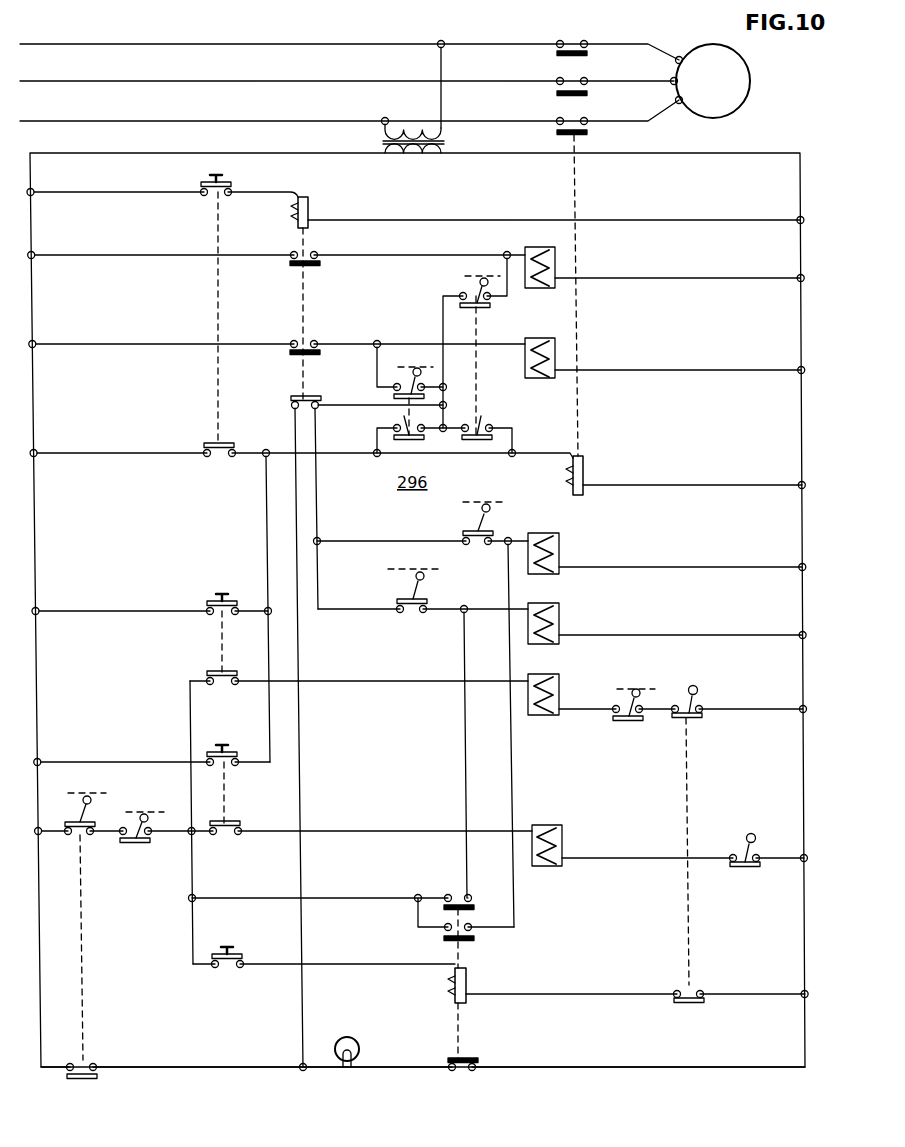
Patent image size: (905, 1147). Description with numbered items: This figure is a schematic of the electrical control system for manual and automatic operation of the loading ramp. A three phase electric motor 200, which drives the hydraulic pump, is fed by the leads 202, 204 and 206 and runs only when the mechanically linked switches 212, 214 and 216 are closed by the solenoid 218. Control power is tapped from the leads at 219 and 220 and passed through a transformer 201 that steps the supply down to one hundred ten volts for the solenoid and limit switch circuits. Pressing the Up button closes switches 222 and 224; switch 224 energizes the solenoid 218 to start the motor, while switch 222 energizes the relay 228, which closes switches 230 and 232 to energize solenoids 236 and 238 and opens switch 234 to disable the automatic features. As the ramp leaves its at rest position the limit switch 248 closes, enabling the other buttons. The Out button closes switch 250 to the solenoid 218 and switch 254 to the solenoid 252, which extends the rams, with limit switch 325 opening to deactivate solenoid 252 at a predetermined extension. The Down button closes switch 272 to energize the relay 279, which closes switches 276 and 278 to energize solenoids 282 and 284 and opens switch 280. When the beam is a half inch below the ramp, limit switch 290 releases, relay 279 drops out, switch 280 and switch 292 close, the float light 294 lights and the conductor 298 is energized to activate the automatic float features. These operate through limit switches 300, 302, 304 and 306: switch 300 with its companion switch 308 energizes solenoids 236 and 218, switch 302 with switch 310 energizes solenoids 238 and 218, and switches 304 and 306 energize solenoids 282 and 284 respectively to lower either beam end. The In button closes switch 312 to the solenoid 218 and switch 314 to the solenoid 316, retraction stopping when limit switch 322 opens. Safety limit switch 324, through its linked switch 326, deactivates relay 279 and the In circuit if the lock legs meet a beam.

The electric motor 200 is at (738, 97).
The transformer 201 is at (433, 138).
The lead 202 is at (38, 44).
The lead 204 is at (38, 81).
The lead 206 is at (38, 121).
The switch 212 is at (553, 55).
The switch 214 is at (553, 94).
The switch 216 is at (553, 133).
The solenoid 218 is at (584, 472).
The tap point 219 is at (434, 36).
The tap point 220 is at (382, 112).
The switch 222 is at (235, 185).
The switch 224 is at (200, 451).
The relay 228 is at (312, 202).
The switch 230 is at (320, 263).
The switch 232 is at (288, 352).
The switch 234 is at (286, 404).
The solenoid 236 is at (547, 239).
The solenoid 238 is at (547, 330).
The limit switch 248 is at (152, 838).
The switch 250 is at (243, 753).
The solenoid 252 is at (556, 825).
The switch 254 is at (242, 827).
The switch 272 is at (246, 960).
The switch 276 is at (472, 932).
The switch 278 is at (472, 898).
The relay 279 is at (475, 967).
The switch 280 is at (478, 1060).
The solenoid 282 is at (544, 533).
The solenoid 284 is at (544, 603).
The limit switch 290 is at (103, 808).
The switch 292 is at (97, 1074).
The light 294 is at (357, 1040).
The conductor 298 is at (299, 730).
The limit switch 300 is at (462, 284).
The limit switch 302 is at (400, 414).
The limit switch 304 is at (466, 521).
The limit switch 306 is at (398, 590).
The switch 308 is at (494, 410).
The switch 310 is at (393, 392).
The switch 312 is at (204, 608).
The switch 314 is at (204, 678).
The solenoid 316 is at (544, 674).
The limit switch 322 is at (611, 716).
The limit switch 324 is at (704, 711).
The limit switch 325 is at (728, 860).
The switch 326 is at (670, 998).